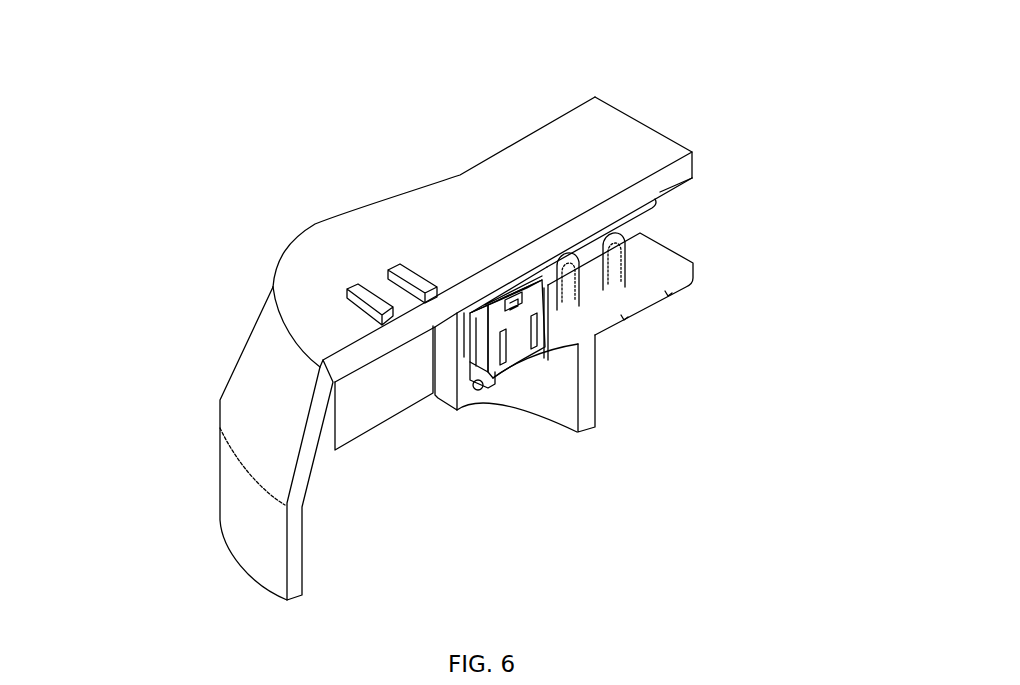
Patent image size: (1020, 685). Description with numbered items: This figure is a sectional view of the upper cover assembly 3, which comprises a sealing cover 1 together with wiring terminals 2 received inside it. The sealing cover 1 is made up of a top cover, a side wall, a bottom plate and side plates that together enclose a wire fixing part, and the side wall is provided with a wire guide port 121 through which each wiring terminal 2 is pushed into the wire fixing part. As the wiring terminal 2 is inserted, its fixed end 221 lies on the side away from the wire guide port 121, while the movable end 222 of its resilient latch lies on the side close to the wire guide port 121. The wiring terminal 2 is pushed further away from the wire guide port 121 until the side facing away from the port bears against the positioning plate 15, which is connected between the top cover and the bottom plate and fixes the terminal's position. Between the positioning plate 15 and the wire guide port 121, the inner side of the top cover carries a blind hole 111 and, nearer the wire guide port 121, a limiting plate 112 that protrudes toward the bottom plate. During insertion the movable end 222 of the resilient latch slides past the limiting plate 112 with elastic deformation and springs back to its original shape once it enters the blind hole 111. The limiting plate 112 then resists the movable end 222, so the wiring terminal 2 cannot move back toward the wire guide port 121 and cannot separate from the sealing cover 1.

The upper cover assembly 3 is at (222, 124).
The sealing cover 1 is at (303, 231).
The wiring terminal 2 is at (517, 394).
The positioning plate 15 is at (437, 401).
The blind hole 111 is at (500, 276).
The limiting plate 112 is at (541, 259).
The wire guide port 121 is at (698, 206).
The fixed end 221 is at (482, 302).
The movable end 222 is at (526, 280).